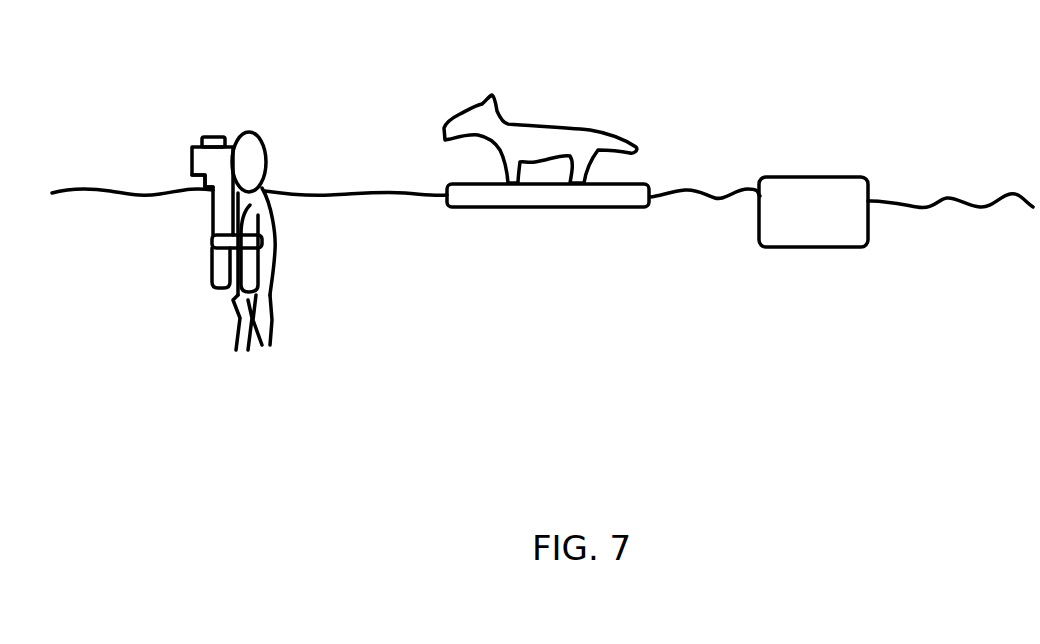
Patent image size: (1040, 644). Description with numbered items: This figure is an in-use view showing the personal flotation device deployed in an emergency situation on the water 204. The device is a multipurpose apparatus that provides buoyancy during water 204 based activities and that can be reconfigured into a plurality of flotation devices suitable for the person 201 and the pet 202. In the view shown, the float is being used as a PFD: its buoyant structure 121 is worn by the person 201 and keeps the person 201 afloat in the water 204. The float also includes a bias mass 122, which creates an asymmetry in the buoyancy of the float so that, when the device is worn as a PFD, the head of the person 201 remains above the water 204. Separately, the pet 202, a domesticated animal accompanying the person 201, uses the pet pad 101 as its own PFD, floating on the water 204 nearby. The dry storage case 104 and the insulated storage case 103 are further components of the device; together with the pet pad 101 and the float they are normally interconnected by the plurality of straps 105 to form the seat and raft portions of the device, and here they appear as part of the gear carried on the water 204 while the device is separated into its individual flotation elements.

The pet pad 101 is at (192, 148).
The insulated storage case 103 is at (812, 208).
The dry storage case 104 is at (213, 136).
The plurality of straps 105 is at (262, 240).
The buoyant structure 121 is at (218, 265).
The bias mass 122 is at (200, 165).
The person 201 is at (255, 164).
The pet 202 is at (523, 137).
The water 204 is at (955, 201).